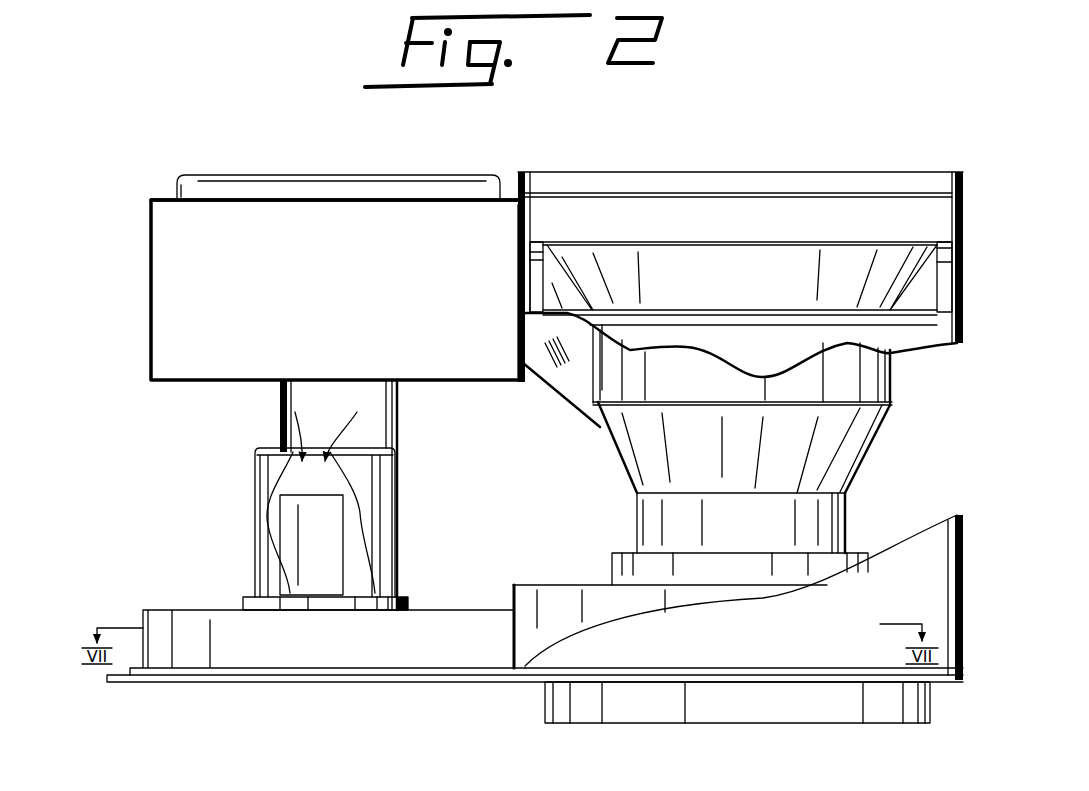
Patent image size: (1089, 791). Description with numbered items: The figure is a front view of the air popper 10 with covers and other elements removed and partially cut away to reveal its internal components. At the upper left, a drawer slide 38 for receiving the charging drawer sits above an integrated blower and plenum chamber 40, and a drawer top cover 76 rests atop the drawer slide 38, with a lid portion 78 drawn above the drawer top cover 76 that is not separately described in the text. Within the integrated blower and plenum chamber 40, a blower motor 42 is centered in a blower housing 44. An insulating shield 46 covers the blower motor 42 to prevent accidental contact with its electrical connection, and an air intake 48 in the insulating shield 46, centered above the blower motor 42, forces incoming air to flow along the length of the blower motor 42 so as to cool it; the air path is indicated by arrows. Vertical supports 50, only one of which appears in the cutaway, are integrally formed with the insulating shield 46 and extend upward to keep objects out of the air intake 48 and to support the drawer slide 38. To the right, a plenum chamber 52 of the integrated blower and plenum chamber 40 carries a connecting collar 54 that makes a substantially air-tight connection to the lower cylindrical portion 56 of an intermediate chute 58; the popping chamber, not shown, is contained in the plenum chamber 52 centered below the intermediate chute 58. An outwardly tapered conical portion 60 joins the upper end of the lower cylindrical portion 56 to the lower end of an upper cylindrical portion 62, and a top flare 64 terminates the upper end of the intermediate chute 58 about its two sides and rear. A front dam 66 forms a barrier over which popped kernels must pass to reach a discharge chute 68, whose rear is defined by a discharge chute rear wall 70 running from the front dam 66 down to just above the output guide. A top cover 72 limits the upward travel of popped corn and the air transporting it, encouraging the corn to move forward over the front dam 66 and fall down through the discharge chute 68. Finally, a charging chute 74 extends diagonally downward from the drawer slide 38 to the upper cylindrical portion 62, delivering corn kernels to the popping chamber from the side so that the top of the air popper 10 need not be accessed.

The air popper 10 is at (973, 124).
The drawer slide 38 is at (151, 313).
The integrated blower and plenum chamber 40 is at (481, 549).
The blower motor 42 is at (288, 507).
The blower housing 44 is at (188, 618).
The insulating shield 46 is at (373, 473).
The air intake 48 is at (317, 450).
The vertical supports 50 is at (388, 423).
The plenum chamber 52 is at (562, 583).
The connecting collar 54 is at (863, 553).
The lower cylindrical portion 56 is at (847, 502).
The intermediate chute 58 is at (919, 442).
The outwardly tapered conical portion 60 is at (885, 418).
The upper cylindrical portion 62 is at (895, 373).
The top flare 64 is at (755, 253).
The front dam 66 is at (728, 310).
The discharge chute 68 is at (925, 337).
The discharge chute rear wall 70 is at (928, 612).
The top cover 72 is at (829, 171).
The charging chute 74 is at (573, 388).
The drawer top cover 76 is at (161, 197).
The lid 78 is at (271, 180).